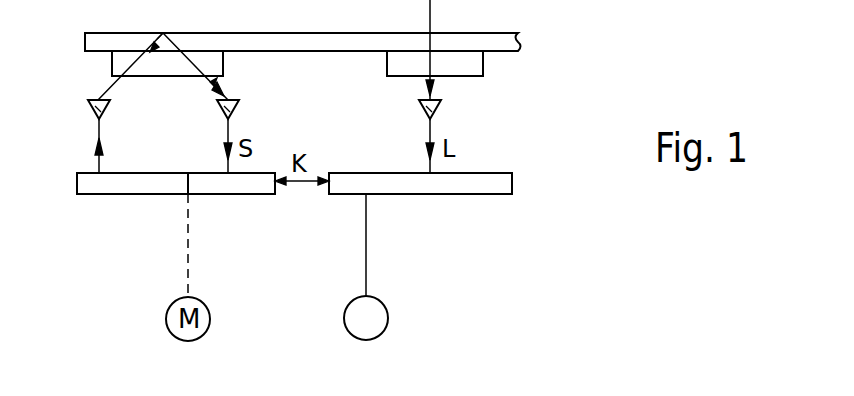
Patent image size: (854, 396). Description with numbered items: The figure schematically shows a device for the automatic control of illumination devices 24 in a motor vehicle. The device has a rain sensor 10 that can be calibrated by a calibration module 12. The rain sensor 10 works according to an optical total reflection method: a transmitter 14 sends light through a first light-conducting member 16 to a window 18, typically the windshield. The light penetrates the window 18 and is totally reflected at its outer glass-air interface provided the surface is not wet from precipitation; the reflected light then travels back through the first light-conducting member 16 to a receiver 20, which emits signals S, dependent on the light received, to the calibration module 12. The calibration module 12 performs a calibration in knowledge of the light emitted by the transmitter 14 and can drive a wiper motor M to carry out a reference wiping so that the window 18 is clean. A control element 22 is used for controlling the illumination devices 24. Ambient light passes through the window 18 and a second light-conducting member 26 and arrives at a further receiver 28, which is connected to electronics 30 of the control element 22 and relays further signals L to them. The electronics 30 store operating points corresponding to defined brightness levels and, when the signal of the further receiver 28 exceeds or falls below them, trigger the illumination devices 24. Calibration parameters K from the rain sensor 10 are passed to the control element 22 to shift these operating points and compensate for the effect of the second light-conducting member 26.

The rain sensor 10 is at (117, 212).
The calibration module 12 is at (208, 180).
The transmitter 14 is at (93, 106).
The first light-conducting member 16 is at (117, 60).
The window 18 is at (92, 40).
The receiver 20 is at (236, 110).
The control element 22 is at (480, 207).
The illumination devices 24 is at (388, 318).
The second light-conducting member 26 is at (478, 67).
The further receiver 28 is at (440, 108).
The electronics 30 is at (505, 180).